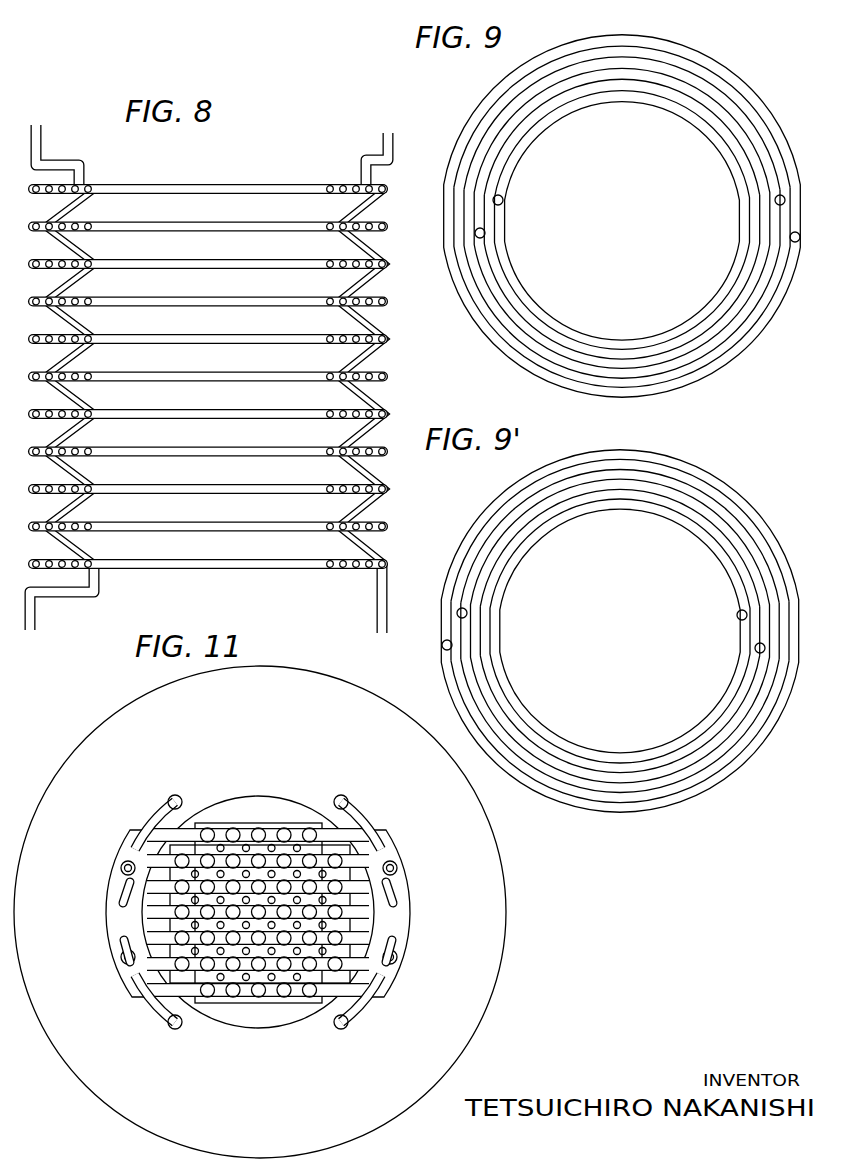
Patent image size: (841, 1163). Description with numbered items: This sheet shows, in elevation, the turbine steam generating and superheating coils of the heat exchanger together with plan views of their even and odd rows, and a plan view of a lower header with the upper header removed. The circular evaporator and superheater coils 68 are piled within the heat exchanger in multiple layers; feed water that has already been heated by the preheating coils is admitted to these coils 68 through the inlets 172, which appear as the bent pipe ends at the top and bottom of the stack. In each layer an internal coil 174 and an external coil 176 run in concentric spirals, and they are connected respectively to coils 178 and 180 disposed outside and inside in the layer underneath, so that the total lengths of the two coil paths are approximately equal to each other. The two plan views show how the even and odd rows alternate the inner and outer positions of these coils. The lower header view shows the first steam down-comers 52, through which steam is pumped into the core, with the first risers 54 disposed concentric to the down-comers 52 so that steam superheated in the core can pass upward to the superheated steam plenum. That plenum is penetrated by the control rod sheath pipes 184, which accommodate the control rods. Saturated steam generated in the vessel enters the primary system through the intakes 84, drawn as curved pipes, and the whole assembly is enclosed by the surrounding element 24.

In FIG. 11, the shell 24 is at (488, 968).
In FIG. 11, the first steam down-comers 52 is at (258, 947).
In FIG. 11, the first risers 54 is at (226, 1003).
In FIG. 8, the evaporator and superheater coils 68 is at (209, 381).
In FIG. 9, the evaporator and superheater coils 68 is at (604, 216).
In FIG. 9', the evaporator and superheater coils 68 is at (619, 651).
In FIG. 11, the intakes 84 is at (172, 1028).
In FIG. 8, the inlets 172 is at (36, 620).
In FIG. 8, the internal coil 174 is at (80, 185).
In FIG. 9, the internal coil 174 is at (515, 313).
In FIG. 8, the external coil 176 is at (366, 186).
In FIG. 9, the external coil 176 is at (462, 287).
In FIG. 8, the coil disposed outside in the layer underneath 178 is at (65, 218).
In FIG. 9', the coil disposed outside in the layer underneath 178 is at (573, 812).
In FIG. 8, the coil disposed inside in the layer underneath 180 is at (345, 220).
In FIG. 9', the coil disposed inside in the layer underneath 180 is at (650, 780).
In FIG. 11, the control rod sheath pipes 184 is at (247, 1003).